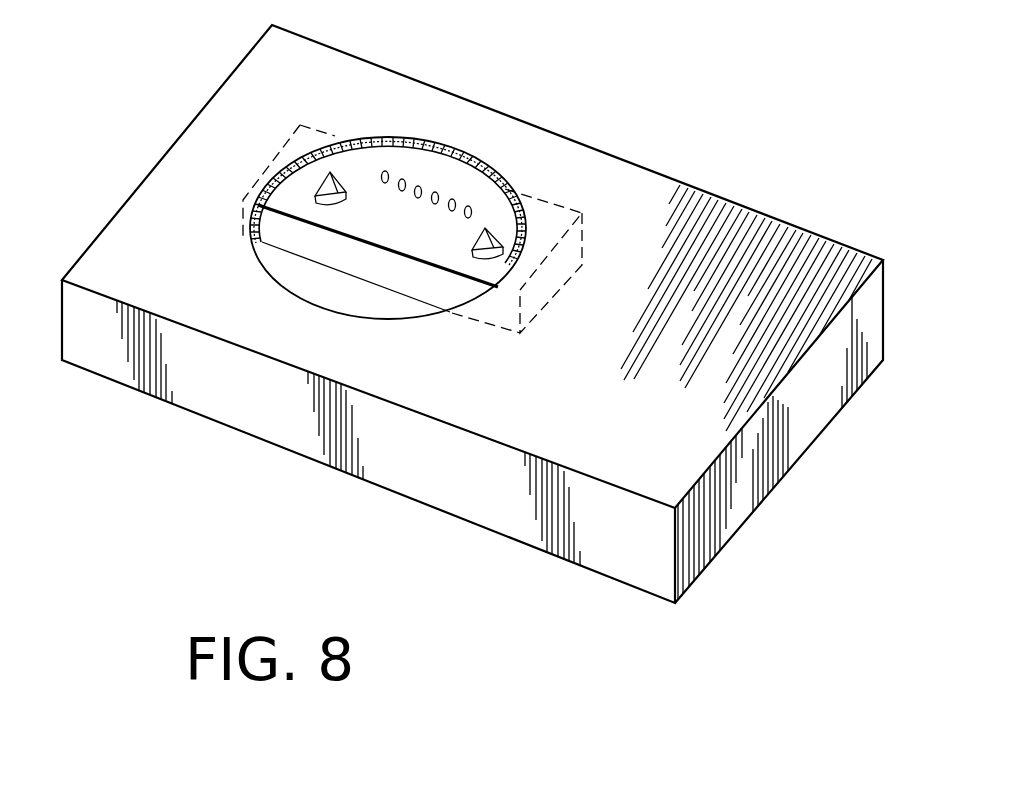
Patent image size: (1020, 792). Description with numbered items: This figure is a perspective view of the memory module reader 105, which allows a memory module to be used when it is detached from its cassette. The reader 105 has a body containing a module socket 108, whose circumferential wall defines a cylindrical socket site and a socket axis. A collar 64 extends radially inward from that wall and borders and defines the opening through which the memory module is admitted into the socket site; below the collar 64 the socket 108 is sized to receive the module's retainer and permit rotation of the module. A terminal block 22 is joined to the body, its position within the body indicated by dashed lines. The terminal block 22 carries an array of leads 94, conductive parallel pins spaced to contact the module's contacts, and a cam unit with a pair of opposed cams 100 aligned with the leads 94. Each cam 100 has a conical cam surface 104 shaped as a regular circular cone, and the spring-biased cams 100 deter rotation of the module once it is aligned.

The memory module reader 105 is at (786, 130).
The terminal block 22 is at (552, 226).
The module socket 108 is at (256, 243).
The cams 100 is at (313, 198).
The conical cam surface 104 is at (336, 194).
The leads 94 is at (437, 190).
The collar 64 is at (467, 207).